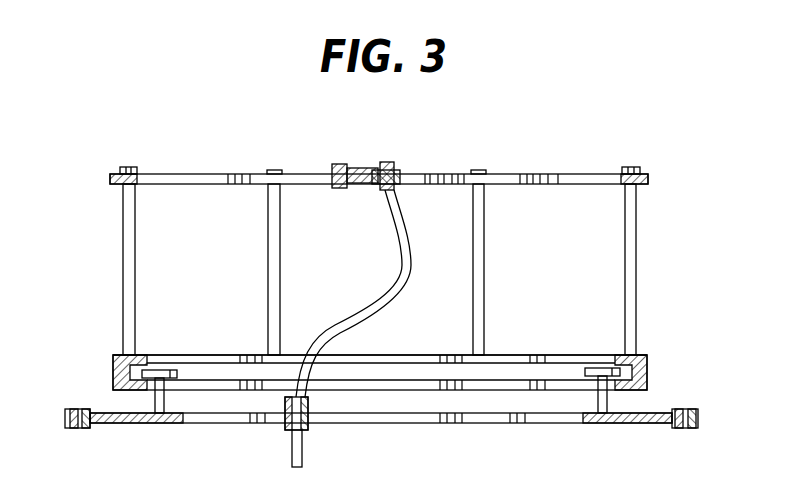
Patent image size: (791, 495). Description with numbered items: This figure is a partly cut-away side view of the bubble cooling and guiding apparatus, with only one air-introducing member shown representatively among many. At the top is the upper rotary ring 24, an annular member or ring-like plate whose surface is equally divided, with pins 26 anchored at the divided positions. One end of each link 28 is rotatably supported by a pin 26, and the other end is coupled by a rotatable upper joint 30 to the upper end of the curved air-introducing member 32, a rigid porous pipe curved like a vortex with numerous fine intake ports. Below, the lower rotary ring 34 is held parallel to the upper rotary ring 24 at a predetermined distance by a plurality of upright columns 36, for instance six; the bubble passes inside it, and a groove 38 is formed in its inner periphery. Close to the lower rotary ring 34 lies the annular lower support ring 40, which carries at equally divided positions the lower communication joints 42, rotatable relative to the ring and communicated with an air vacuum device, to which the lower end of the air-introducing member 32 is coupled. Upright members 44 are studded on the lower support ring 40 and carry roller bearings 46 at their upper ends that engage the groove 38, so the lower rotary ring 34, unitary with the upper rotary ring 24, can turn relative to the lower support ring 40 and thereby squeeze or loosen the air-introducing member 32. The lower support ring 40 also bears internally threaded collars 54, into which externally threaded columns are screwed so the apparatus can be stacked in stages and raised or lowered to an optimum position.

The upper rotary ring 24 is at (576, 175).
The pin 26 is at (340, 165).
The link 28 is at (358, 168).
The upper joint 30 is at (388, 162).
The curved air-introducing member 32 is at (405, 268).
The lower rotary ring 34 is at (648, 372).
The upright column 36 is at (637, 272).
The groove 38 is at (647, 355).
The lower support ring 40 is at (131, 425).
The lower communication joint 42 is at (308, 408).
The upright member 44 is at (163, 398).
The roller bearing 46 is at (157, 371).
The collar 54 is at (78, 430).